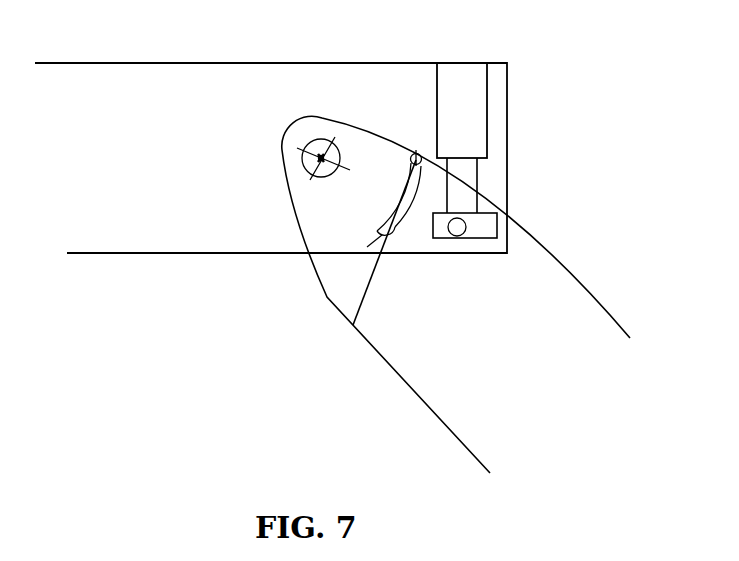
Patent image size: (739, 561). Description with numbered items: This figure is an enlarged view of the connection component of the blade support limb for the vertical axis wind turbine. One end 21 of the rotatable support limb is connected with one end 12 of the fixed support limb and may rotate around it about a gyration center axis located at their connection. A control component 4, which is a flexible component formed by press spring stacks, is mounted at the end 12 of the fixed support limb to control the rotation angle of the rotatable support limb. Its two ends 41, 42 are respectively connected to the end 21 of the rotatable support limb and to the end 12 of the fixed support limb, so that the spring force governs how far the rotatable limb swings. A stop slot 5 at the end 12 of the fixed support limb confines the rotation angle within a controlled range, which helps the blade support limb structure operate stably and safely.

The one end of the fixed support limb 12 is at (395, 72).
The end of the control component 42 is at (465, 73).
The control component 4 is at (472, 123).
The end of the control component 41 is at (477, 230).
The one end of the rotatable support limb 21 is at (317, 210).
The stop slot 5 is at (353, 325).